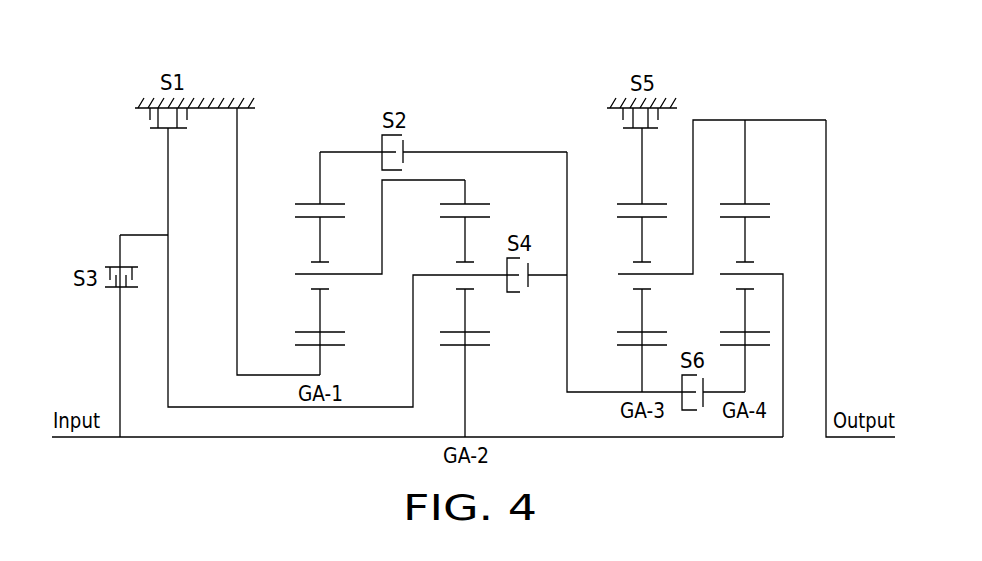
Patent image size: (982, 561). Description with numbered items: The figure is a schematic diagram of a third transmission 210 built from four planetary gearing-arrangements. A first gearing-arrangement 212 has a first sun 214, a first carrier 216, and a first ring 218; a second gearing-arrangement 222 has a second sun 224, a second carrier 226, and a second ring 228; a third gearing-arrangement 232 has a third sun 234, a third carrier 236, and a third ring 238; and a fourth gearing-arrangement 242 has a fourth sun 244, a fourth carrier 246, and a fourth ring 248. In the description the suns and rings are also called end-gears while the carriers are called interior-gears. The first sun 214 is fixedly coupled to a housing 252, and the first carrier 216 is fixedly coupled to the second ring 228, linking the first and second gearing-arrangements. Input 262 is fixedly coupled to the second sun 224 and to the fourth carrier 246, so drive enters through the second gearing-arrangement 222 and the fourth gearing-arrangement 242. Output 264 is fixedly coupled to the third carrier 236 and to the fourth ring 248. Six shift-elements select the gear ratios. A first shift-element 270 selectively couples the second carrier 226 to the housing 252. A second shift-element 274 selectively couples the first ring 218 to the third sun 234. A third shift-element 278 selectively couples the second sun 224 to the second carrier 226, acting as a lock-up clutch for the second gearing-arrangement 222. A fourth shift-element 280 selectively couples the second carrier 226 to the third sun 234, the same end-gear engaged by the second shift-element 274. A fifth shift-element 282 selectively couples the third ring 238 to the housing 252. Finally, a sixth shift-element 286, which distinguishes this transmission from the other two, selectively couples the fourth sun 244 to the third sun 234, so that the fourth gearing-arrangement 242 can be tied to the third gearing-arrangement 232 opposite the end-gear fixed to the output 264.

The third transmission 210 is at (127, 74).
The first gearing-arrangement 212 is at (323, 128).
The first sun 214 is at (318, 372).
The first carrier 216 is at (292, 261).
The first ring 218 is at (320, 197).
The second gearing-arrangement 222 is at (474, 405).
The second sun 224 is at (467, 380).
The second carrier 226 is at (442, 261).
The second ring 228 is at (465, 197).
The third gearing-arrangement 232 is at (632, 431).
The third sun 234 is at (641, 385).
The third carrier 236 is at (614, 261).
The third ring 238 is at (642, 160).
The fourth gearing-arrangement 242 is at (748, 431).
The fourth sun 244 is at (745, 382).
The fourth carrier 246 is at (773, 260).
The fourth ring 248 is at (745, 183).
The housing 252 is at (220, 108).
The input 262 is at (218, 438).
The output 264 is at (828, 298).
The first shift-element 270 is at (157, 130).
The second shift-element 274 is at (405, 140).
The third shift-element 278 is at (110, 265).
The fourth shift-element 280 is at (528, 290).
The fifth shift-element 282 is at (632, 131).
The sixth shift-element 286 is at (682, 378).